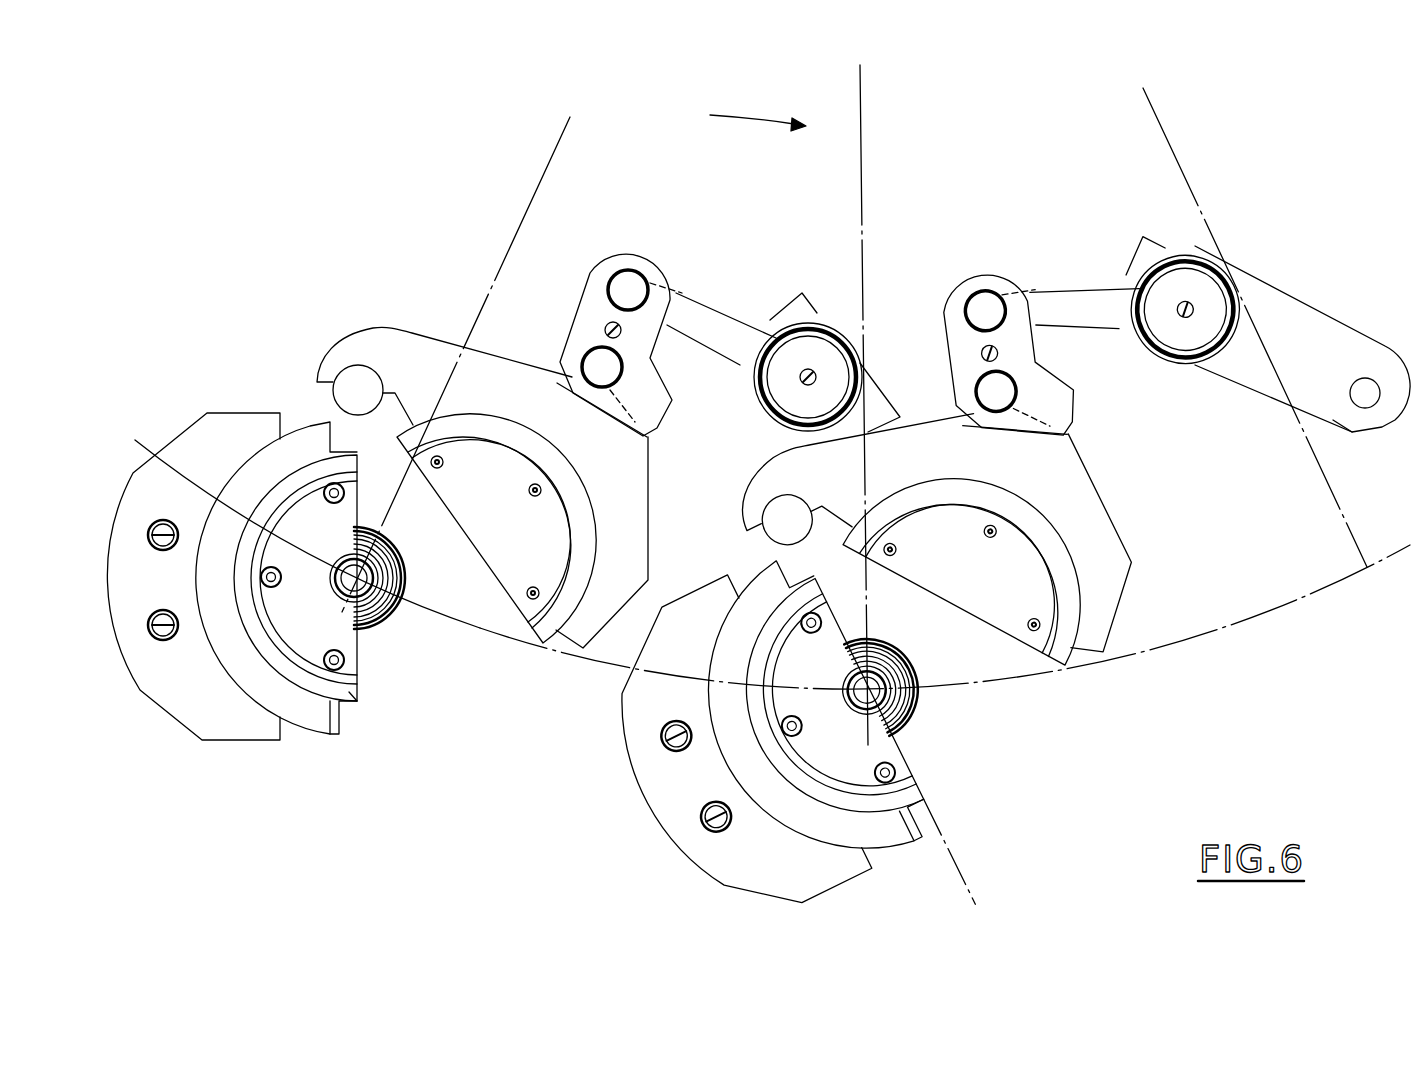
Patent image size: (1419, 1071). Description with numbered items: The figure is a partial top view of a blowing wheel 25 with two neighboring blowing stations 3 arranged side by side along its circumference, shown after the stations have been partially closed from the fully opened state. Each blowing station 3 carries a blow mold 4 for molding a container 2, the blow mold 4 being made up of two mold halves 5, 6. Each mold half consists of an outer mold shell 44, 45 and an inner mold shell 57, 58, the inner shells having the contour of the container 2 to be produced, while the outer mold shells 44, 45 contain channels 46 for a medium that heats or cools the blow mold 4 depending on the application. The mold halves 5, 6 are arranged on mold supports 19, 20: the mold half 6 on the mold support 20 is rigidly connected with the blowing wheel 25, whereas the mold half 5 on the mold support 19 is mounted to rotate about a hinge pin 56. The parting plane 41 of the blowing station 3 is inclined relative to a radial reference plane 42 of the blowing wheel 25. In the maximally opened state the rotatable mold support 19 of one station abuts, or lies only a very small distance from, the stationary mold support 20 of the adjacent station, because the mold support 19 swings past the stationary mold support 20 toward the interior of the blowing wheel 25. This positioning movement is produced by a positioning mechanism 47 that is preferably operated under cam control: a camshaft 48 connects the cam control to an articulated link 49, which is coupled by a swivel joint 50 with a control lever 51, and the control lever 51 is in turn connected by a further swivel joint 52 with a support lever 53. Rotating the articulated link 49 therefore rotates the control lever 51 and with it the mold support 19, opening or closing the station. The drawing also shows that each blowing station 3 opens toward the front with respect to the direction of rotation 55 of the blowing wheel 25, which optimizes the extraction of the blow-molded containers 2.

The container 2 is at (367, 578).
The blowing station 3 is at (478, 706).
The blow mold 4 is at (193, 576).
The mold half 5 is at (410, 293).
The mold half 6 is at (187, 364).
The mold support 19 is at (1074, 549).
The mold support 20 is at (722, 760).
The blowing wheel 25 is at (1293, 537).
The parting plane 41 is at (837, 752).
The radial reference plane 42 is at (1100, 505).
The outer mold shell 44 is at (602, 542).
The outer mold shell 45 is at (276, 578).
The channel 46 is at (885, 772).
The positioning mechanism 47 is at (1018, 228).
The camshaft 48 is at (1385, 340).
The articulated link 49 is at (1272, 312).
The swivel joint 50 is at (1179, 296).
The control lever 51 is at (1087, 304).
The swivel joint 52 is at (1004, 363).
The support lever 53 is at (986, 311).
The direction of rotation 55 is at (752, 122).
The hinge pin 56 is at (482, 382).
The inner mold shell 57 is at (496, 528).
The inner mold shell 58 is at (295, 578).